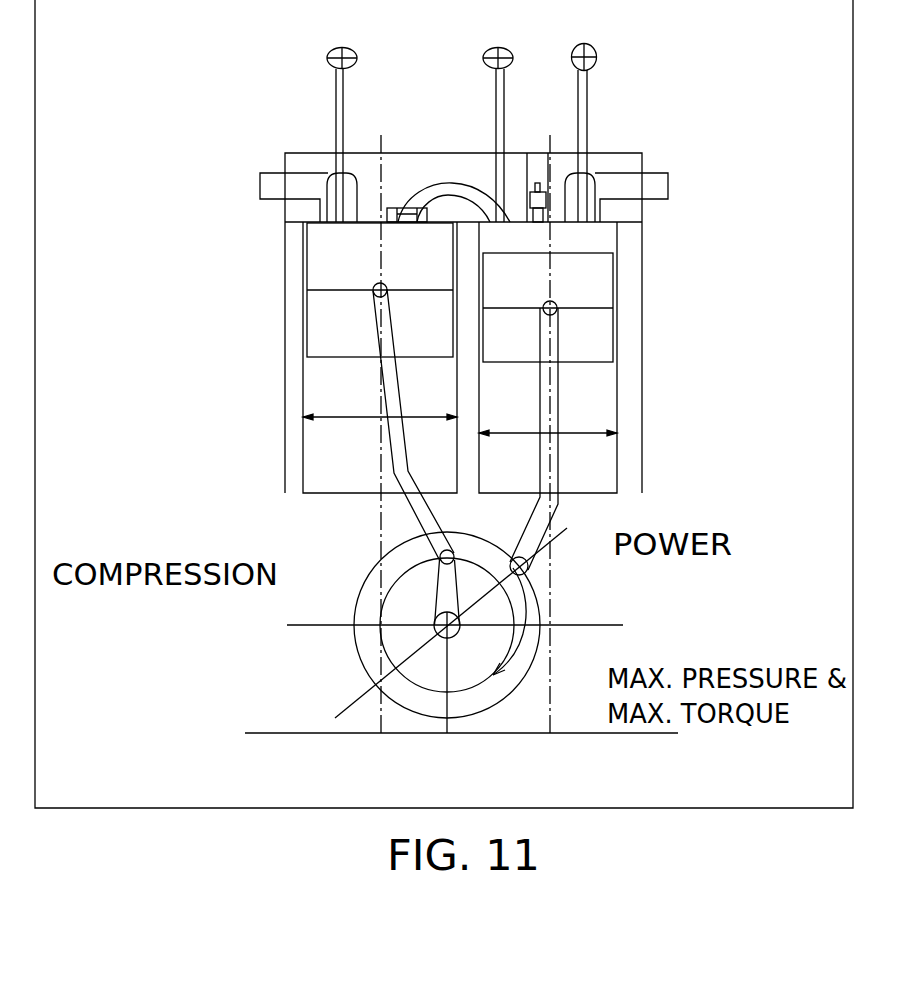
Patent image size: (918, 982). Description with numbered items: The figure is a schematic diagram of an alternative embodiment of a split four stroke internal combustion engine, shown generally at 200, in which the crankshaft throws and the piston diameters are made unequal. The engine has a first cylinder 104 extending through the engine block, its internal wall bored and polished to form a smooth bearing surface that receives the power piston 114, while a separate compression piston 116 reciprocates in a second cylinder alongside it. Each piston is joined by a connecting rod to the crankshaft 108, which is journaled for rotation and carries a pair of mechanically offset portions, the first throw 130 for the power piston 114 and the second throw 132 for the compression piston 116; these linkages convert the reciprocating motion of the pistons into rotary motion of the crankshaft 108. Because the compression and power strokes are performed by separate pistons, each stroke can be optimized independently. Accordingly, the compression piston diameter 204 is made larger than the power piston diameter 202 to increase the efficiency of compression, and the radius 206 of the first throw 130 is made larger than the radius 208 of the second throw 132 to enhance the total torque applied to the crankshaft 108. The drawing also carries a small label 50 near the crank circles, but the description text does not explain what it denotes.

The split four stroke engine 200 is at (196, 667).
The first cylinder 104 is at (625, 360).
The power piston 114 is at (590, 292).
The compression piston 116 is at (342, 253).
The power piston diameter 202 is at (590, 433).
The compression piston diameter 204 is at (340, 428).
The crankshaft 108 is at (433, 627).
The first throw 130 is at (490, 597).
The second throw 132 is at (440, 590).
The radius of the first throw 206 is at (538, 655).
The radius of the second throw 208 is at (408, 568).
The crank phase angle 50 is at (385, 647).